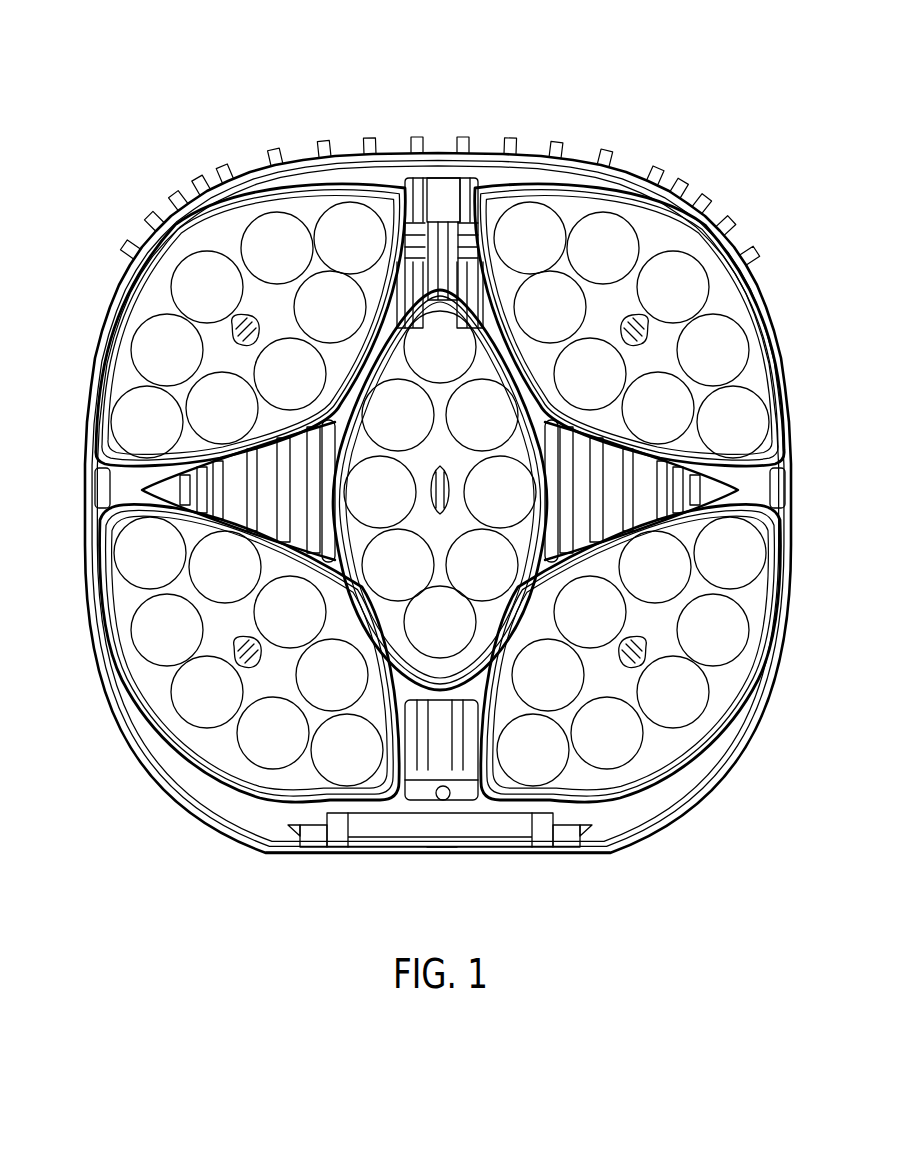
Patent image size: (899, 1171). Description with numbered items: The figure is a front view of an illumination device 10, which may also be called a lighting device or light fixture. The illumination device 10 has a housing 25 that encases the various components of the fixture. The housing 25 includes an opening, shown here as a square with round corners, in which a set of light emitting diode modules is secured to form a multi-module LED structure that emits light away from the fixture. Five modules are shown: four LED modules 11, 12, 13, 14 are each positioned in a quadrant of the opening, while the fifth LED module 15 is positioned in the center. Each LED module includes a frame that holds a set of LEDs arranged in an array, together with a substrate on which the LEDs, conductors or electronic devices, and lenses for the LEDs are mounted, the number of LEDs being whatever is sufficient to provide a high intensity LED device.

The illumination device 10 is at (162, 84).
The LED module 11 is at (222, 283).
The LED module 12 is at (657, 243).
The LED module 13 is at (720, 672).
The LED module 14 is at (160, 667).
The LED module 15 is at (443, 694).
The housing 25 is at (88, 585).